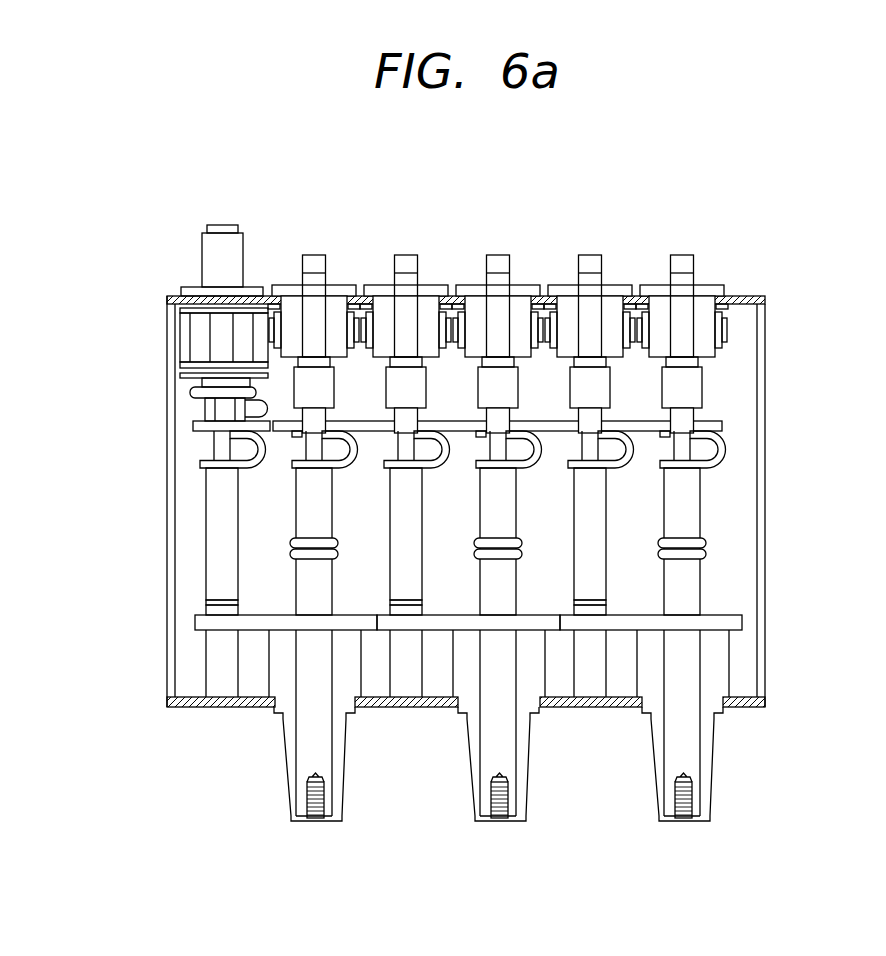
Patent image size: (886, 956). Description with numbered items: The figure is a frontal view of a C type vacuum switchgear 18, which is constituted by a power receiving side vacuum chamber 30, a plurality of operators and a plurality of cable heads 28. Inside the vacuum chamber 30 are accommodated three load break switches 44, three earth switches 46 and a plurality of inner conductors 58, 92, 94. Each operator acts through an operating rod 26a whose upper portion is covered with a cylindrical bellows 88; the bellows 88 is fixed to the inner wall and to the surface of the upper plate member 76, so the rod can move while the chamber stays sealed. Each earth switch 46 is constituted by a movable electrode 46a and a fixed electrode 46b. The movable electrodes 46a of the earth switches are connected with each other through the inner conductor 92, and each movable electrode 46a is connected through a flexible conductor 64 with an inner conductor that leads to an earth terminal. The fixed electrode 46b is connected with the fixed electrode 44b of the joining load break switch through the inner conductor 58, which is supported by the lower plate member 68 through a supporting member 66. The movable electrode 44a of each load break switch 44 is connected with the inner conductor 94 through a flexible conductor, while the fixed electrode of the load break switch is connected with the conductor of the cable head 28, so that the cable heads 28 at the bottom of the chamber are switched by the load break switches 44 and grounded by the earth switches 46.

The C type vacuum switchgear 18 is at (428, 148).
The operating rod 26a is at (236, 263).
The cable head 28 is at (262, 734).
The power receiving side vacuum chamber 30 is at (150, 550).
The load break switch 44 is at (574, 541).
The movable electrode of load break switch 44a is at (683, 540).
The fixed electrode of load break switch 44b is at (680, 560).
The earth switch 46 is at (329, 640).
The movable electrode 46a is at (222, 603).
The fixed electrode 46b is at (226, 614).
The inner conductor 58 is at (197, 627).
The flexible conductor 64 is at (200, 465).
The supporting member 66 is at (217, 673).
The lower plate member 68 is at (618, 703).
The upper plate member 76 is at (740, 295).
The cylindrical bellows 88 is at (724, 323).
The inner conductor 92 is at (193, 426).
The inner conductor 94 is at (710, 421).